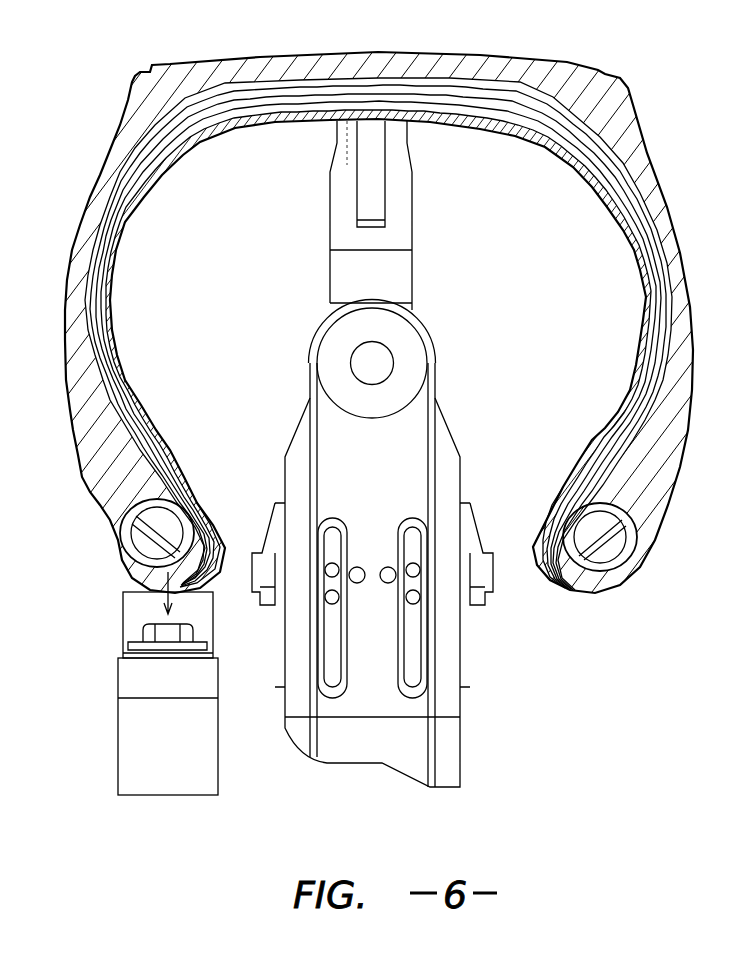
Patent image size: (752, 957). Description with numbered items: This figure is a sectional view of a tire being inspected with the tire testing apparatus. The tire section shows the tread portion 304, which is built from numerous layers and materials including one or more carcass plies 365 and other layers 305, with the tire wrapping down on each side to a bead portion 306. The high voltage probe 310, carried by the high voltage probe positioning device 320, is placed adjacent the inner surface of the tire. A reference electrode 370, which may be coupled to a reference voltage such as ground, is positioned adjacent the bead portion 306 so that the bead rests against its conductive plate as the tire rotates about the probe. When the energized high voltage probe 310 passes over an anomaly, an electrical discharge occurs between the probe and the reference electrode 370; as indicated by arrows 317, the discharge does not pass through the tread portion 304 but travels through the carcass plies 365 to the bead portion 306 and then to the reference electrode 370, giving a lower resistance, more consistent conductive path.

The tread portion 304 is at (633, 92).
The other layers 305 is at (242, 87).
The arrows 317 is at (117, 217).
The carcass plies 365 is at (108, 306).
The bead portion 306 is at (118, 530).
The high voltage probe 310 is at (414, 186).
The high voltage probe positioning device 320 is at (462, 640).
The reference electrode 370 is at (122, 613).